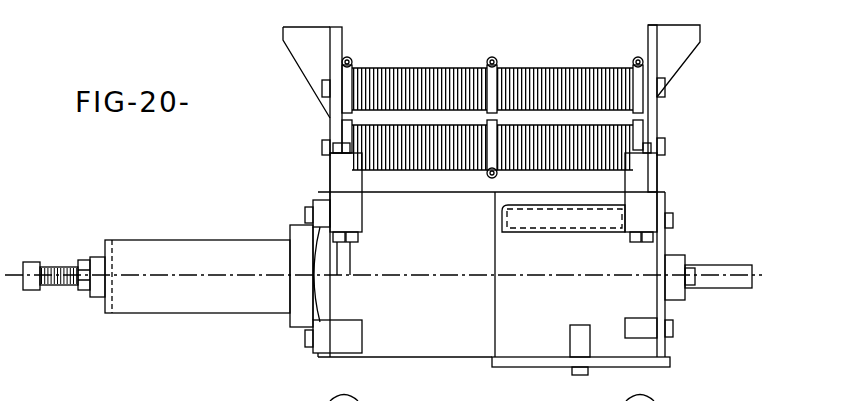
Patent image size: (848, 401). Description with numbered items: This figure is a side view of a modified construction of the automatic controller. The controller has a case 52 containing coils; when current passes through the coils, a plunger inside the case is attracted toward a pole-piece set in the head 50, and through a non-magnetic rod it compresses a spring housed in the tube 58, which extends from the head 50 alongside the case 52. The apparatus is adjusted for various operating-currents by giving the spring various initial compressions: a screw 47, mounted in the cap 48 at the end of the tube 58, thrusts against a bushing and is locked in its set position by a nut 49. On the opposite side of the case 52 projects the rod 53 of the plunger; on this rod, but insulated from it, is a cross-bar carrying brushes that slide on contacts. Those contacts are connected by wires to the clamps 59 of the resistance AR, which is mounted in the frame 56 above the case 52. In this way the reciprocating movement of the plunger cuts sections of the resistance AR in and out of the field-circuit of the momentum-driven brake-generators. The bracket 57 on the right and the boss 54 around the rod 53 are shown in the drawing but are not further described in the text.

The screw 47 is at (30, 262).
The cap 48 is at (102, 300).
The nut 49 is at (80, 262).
The head 50 is at (313, 312).
The case 52 is at (443, 357).
The rod 53 is at (752, 270).
The bearing boss 54 is at (685, 258).
The frame 56 is at (330, 117).
The right bracket plate 57 is at (660, 112).
The tube 58 is at (153, 240).
The clamps 59 is at (352, 62).
The resistance AR is at (466, 70).